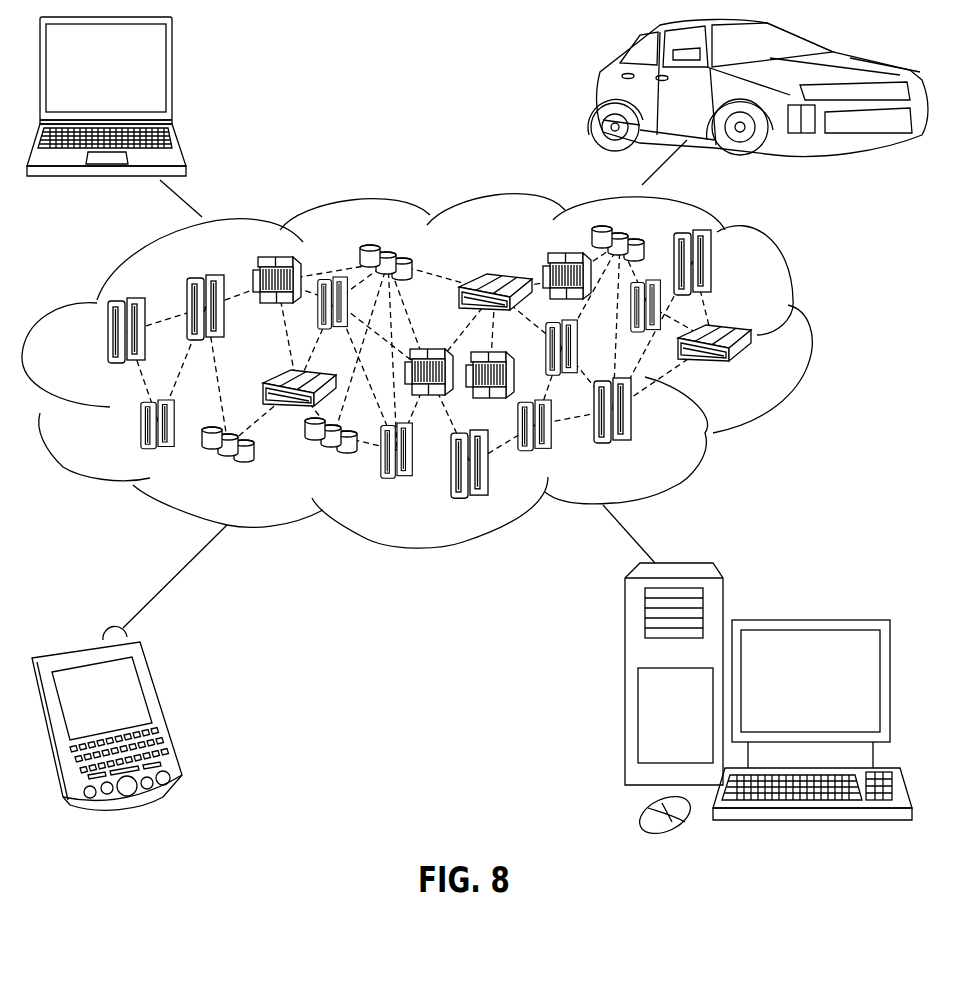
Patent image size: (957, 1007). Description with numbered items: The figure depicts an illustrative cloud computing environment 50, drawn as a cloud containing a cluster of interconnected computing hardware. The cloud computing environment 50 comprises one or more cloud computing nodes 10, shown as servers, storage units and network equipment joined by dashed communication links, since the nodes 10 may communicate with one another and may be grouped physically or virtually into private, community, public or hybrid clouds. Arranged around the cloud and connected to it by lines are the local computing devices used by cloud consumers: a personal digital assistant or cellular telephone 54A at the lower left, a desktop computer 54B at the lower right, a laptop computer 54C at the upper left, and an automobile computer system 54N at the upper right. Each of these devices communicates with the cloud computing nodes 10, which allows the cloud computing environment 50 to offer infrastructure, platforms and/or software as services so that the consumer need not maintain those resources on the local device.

The cloud computing node 10 is at (757, 371).
The cloud computing environment 50 is at (443, 371).
The personal digital assistant or cellular telephone 54A is at (165, 708).
The desktop computer 54B is at (808, 618).
The laptop computer 54C is at (173, 77).
The automobile computer system 54N is at (600, 90).